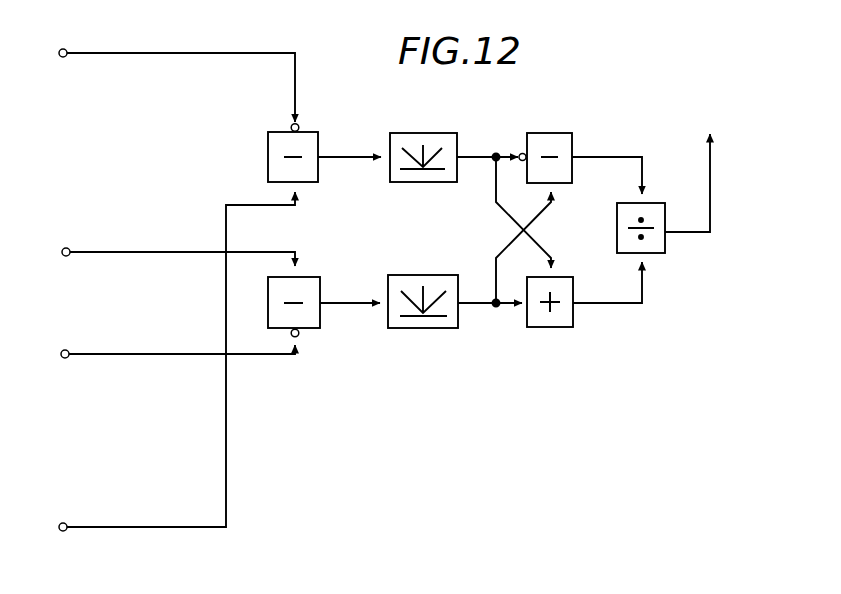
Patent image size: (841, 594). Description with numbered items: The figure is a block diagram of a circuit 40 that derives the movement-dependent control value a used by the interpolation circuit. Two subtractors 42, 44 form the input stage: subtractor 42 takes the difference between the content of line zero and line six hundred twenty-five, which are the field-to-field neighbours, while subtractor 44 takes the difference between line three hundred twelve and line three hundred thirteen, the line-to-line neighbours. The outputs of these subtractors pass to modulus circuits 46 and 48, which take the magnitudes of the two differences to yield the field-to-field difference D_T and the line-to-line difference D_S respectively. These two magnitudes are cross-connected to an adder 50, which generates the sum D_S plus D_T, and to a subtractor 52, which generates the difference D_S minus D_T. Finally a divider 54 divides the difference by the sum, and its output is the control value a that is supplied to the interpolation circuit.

The circuit 40 is at (353, 372).
The subtractor 42 is at (268, 157).
The subtractor 44 is at (310, 277).
The modulus circuit 46 is at (436, 133).
The modulus circuit 48 is at (410, 275).
The adder 50 is at (560, 277).
The subtractor 52 is at (572, 135).
The divider 54 is at (656, 203).